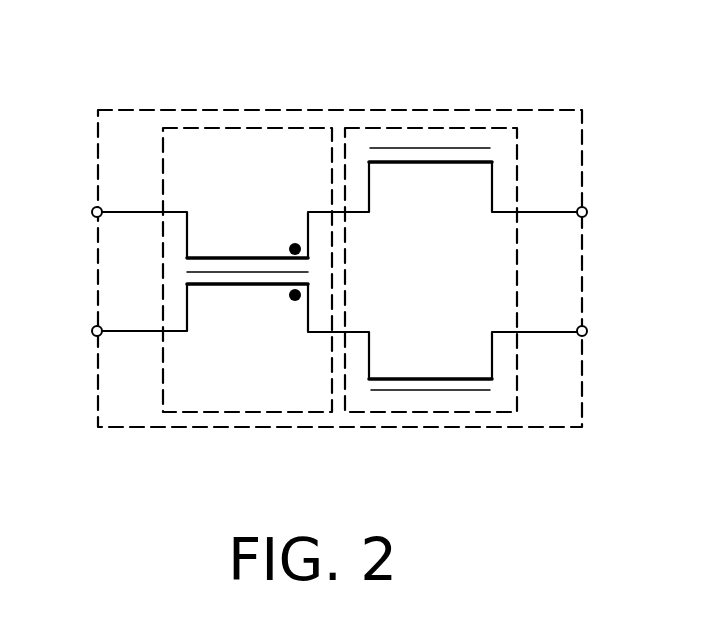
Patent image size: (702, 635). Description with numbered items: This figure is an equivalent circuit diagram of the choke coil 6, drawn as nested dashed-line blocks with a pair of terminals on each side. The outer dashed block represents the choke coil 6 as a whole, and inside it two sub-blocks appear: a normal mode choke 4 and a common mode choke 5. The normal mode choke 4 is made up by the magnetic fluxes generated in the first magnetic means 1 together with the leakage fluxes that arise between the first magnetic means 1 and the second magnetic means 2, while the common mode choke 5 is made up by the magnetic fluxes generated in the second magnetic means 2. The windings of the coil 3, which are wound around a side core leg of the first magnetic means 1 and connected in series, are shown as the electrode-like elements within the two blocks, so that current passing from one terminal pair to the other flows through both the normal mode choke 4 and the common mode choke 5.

The first magnetic means 1 is at (477, 148).
The second magnetic means 2 is at (227, 272).
The coil 3 is at (264, 258).
The normal mode choke 4 is at (453, 413).
The common mode choke 5 is at (190, 412).
The choke coil 6 is at (130, 427).